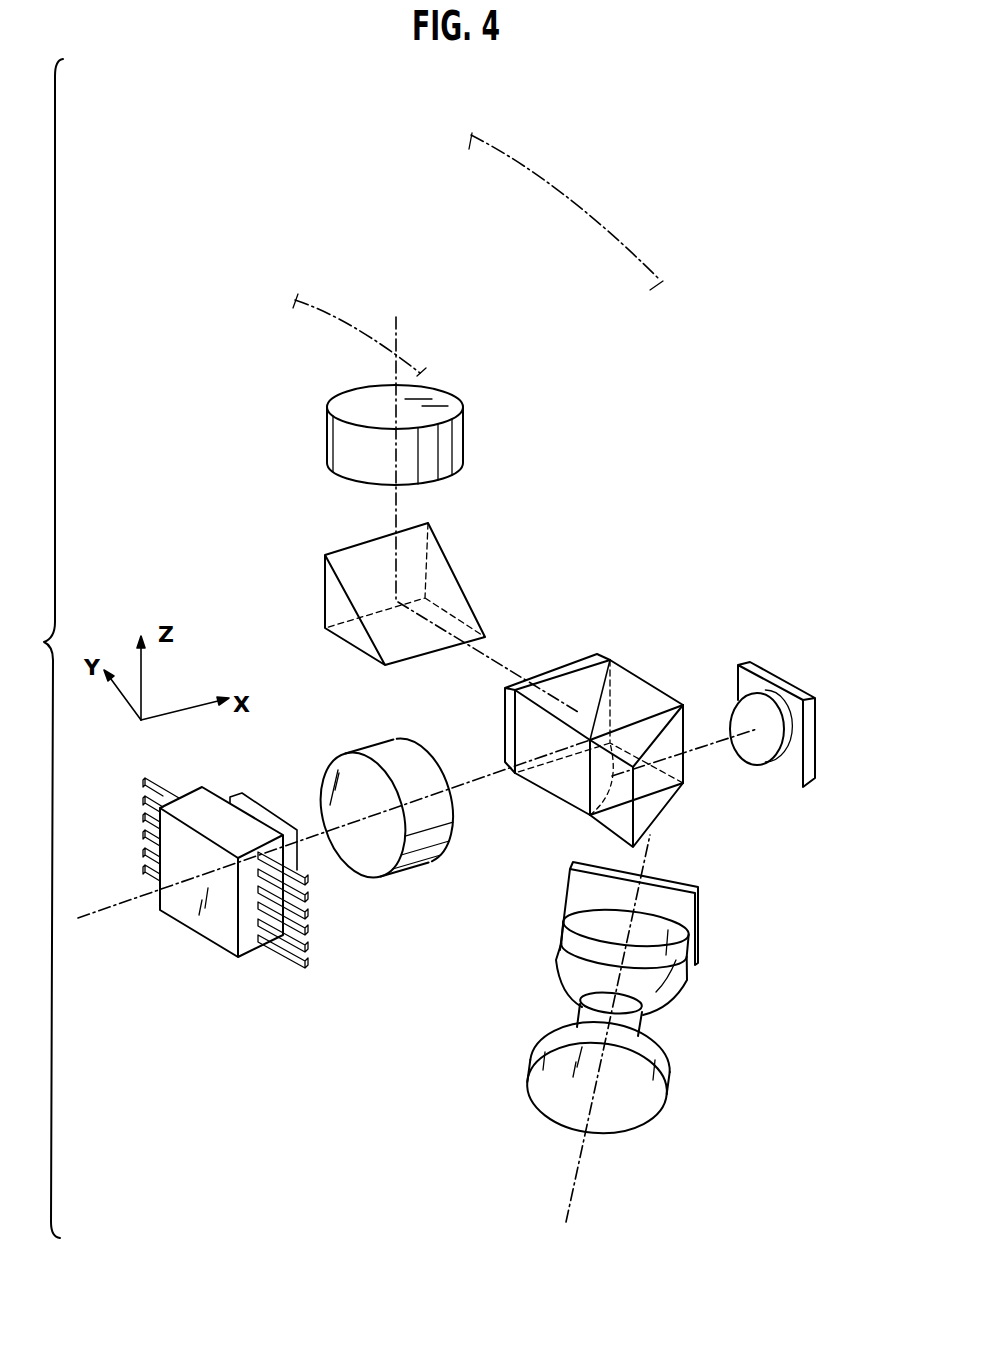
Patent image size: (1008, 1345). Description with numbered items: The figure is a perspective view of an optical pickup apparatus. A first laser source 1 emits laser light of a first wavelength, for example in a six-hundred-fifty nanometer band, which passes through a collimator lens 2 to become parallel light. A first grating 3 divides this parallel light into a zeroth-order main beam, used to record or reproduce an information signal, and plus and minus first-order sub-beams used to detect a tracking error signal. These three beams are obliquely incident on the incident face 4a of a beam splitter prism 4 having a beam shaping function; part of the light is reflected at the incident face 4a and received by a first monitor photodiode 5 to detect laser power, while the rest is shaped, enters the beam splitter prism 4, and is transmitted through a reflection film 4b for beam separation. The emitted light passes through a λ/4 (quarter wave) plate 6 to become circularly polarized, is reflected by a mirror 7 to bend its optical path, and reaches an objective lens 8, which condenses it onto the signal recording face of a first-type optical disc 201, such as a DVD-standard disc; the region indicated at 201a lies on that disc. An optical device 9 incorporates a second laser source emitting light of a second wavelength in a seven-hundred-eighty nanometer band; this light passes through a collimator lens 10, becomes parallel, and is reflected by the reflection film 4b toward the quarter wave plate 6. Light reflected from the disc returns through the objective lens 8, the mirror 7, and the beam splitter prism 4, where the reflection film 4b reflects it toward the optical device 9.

The first laser source 1 is at (668, 1081).
The collimator lens 2 is at (686, 966).
The first grating 3 is at (700, 907).
The beam splitter prism 4 is at (630, 688).
The incident face 4a is at (684, 784).
The reflection film 4b is at (590, 817).
The first monitor photodiode 5 is at (808, 735).
The λ/4 (quarter wave) plate 6 is at (564, 668).
The mirror 7 is at (443, 594).
The objective lens 8 is at (466, 442).
The optical device 9 is at (262, 951).
The collimator lens 10 is at (428, 861).
The first-type optical disc 201 is at (598, 227).
The housing portion 201a is at (328, 312).